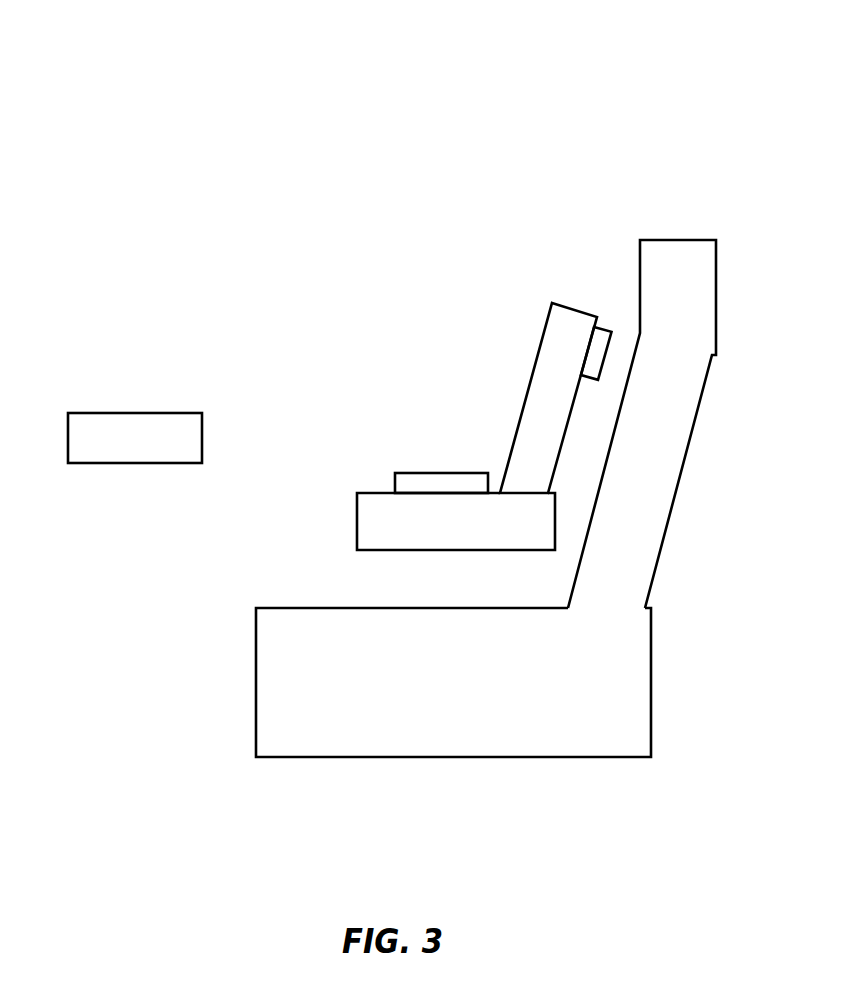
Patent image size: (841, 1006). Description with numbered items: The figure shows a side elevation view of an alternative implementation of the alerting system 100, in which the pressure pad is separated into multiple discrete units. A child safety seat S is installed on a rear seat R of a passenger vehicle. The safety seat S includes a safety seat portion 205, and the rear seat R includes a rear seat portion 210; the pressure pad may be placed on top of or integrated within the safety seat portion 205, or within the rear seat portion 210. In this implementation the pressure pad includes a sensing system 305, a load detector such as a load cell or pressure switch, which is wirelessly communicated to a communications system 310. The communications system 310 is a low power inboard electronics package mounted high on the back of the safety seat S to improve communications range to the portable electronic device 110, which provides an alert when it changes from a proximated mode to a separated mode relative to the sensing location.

The alerting system 100 is at (455, 388).
The portable electronic device 110 is at (133, 413).
The safety seat portion 205 is at (355, 517).
The rear seat portion 210 is at (430, 650).
The sensing system 305 is at (394, 476).
The communications system 310 is at (603, 330).
The rear seat R is at (692, 258).
The child safety seat S is at (562, 332).